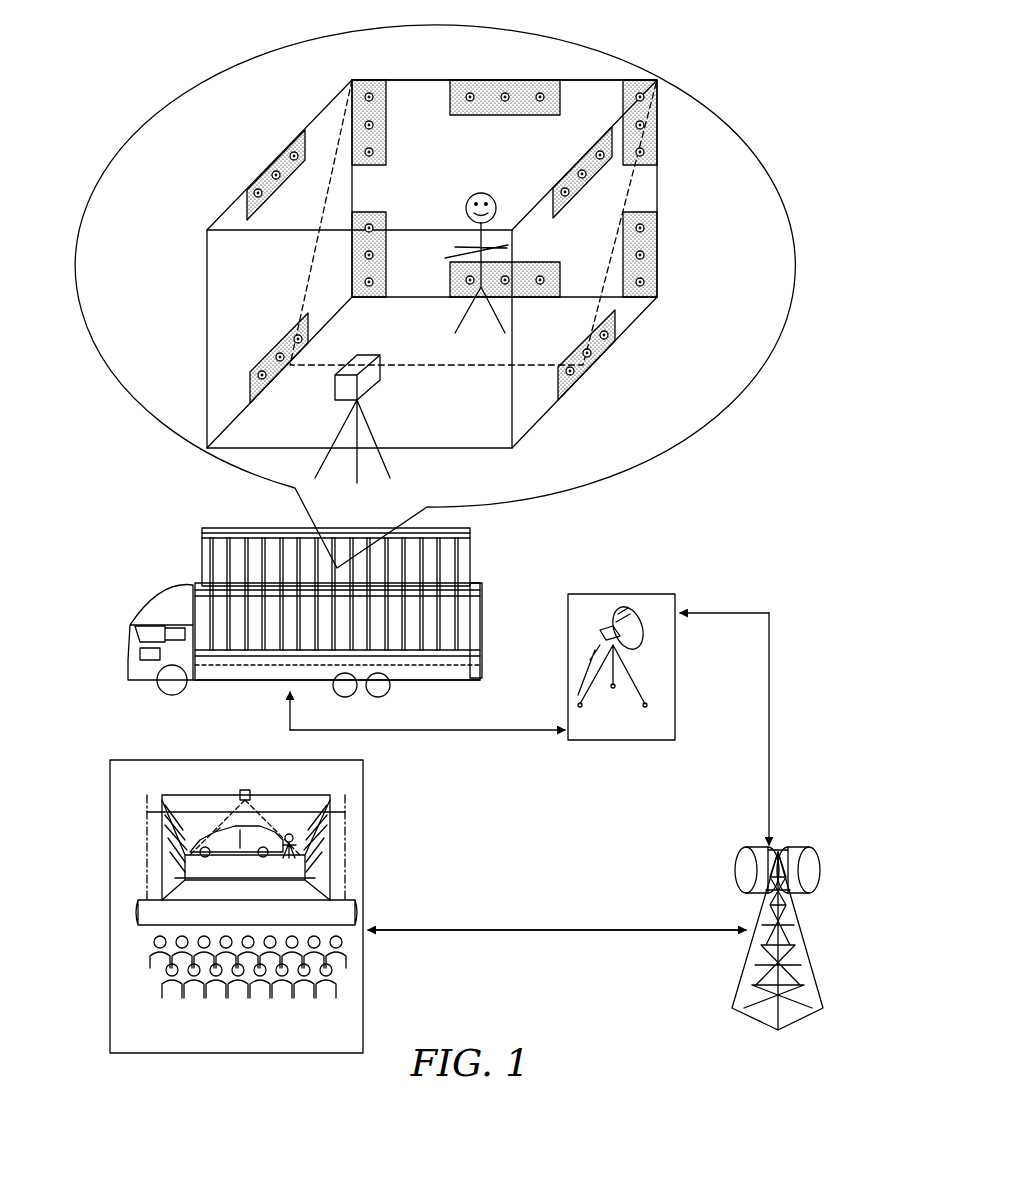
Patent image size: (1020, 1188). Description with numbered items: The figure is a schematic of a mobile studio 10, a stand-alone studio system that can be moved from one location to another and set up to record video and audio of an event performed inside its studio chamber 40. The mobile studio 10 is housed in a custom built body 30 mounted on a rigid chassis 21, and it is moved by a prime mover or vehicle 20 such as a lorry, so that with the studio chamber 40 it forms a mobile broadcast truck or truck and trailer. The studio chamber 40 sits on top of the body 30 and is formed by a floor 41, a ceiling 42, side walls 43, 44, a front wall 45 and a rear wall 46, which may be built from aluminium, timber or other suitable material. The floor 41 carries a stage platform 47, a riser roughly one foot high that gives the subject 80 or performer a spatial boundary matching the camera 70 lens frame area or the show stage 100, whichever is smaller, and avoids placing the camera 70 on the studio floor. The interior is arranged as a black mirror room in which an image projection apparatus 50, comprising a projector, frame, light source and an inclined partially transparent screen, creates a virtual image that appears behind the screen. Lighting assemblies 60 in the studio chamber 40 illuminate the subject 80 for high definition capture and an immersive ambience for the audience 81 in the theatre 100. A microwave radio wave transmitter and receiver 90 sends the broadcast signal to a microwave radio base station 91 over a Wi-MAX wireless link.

The mobile studio 10 is at (82, 598).
The prime mover/vehicle 20 is at (272, 604).
The chassis 21 is at (245, 685).
The body 30 is at (195, 524).
The studio chamber 40 is at (455, 429).
The floor 41 is at (470, 452).
The ceiling 42 is at (408, 78).
The side wall 43 is at (232, 190).
The side wall 44 is at (646, 190).
The front wall 45 is at (230, 345).
The rear wall 46 is at (522, 78).
The stage platform 47 is at (560, 333).
The image projection apparatus 50 is at (312, 246).
The lighting assemblies 60 is at (632, 92).
The camera 70 is at (378, 382).
The subject 80 is at (455, 262).
The audience 81 is at (208, 955).
The microwave radio wave transmitter and receiver 90 is at (624, 607).
The microwave radio base station 91 is at (790, 855).
The show or theatre stage 100 is at (275, 906).